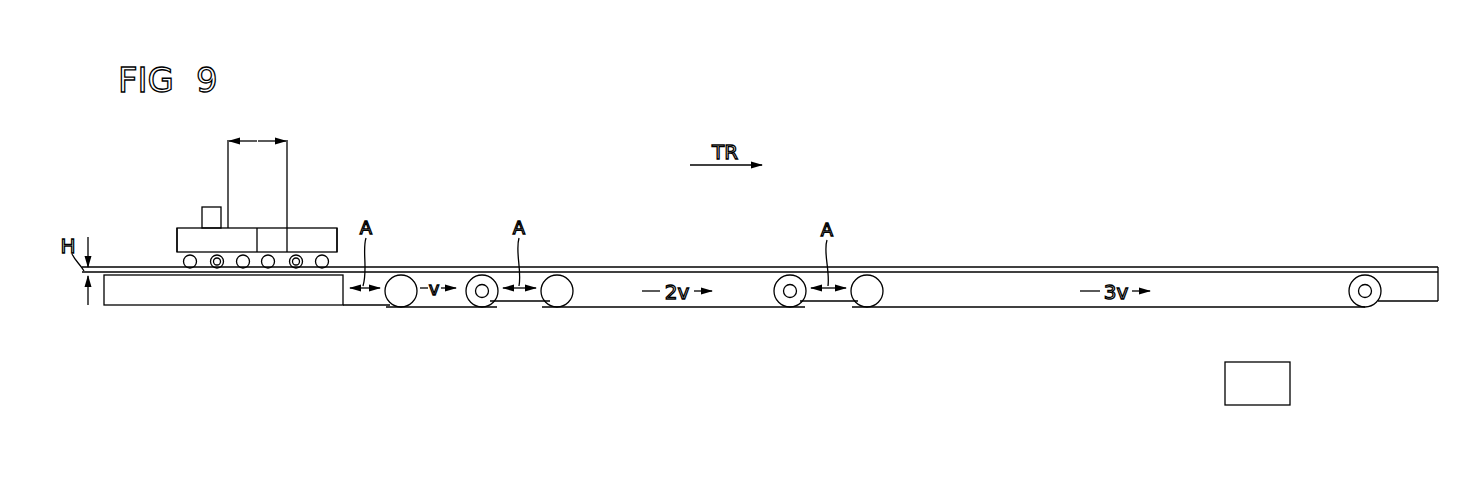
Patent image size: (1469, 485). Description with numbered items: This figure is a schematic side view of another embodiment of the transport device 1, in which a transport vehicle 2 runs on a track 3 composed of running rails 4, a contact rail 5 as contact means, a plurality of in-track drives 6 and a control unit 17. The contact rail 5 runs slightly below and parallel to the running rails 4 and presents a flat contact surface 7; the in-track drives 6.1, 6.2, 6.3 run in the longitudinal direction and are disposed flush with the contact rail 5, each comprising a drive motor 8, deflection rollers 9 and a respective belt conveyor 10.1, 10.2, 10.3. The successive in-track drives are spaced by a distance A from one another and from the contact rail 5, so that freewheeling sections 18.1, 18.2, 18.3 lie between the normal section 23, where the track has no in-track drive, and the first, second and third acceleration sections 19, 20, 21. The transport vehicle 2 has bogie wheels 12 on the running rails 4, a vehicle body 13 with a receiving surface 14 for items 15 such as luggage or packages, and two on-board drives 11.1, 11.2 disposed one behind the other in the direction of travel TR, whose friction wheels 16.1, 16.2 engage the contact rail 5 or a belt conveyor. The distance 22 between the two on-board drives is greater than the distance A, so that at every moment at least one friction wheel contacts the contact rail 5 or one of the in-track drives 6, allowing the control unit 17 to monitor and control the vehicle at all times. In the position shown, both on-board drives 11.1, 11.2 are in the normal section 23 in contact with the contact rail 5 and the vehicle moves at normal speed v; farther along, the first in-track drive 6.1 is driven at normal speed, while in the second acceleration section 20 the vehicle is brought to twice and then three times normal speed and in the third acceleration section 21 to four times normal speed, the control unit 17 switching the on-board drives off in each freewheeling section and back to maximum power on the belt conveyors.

The transport device 1 is at (1061, 193).
The transport vehicle 2 is at (272, 212).
The track 3 is at (1062, 375).
The running rails 4 is at (130, 267).
The contact rail 5 is at (123, 306).
The in-track drives 6 is at (1062, 338).
The first in-track drive 6.1 is at (418, 308).
The second in-track drive 6.2 is at (625, 308).
The third in-track drive 6.3 is at (968, 308).
The contact surface 7 is at (156, 272).
The drive motor 8 is at (474, 282).
The deflection rollers 9 is at (397, 275).
The belt conveyor of the first in-track drive 10.1 is at (420, 267).
The belt conveyor of the second in-track drive 10.2 is at (628, 267).
The belt conveyor of the third in-track drive 10.3 is at (943, 267).
The first on-board drive 11.1 is at (298, 280).
The second on-board drive 11.2 is at (220, 280).
The bogie wheels 12 is at (178, 228).
The vehicle body 13 is at (322, 228).
The receiving surface 14 is at (294, 224).
The items 15 is at (210, 207).
The friction wheel of the first on-board drive 16.1 is at (272, 280).
The friction wheel of the second on-board drive 16.2 is at (192, 280).
The control unit 17 is at (1291, 385).
The first freewheeling section 18.1 is at (372, 313).
The second freewheeling section 18.2 is at (518, 313).
The third freewheeling section 18.3 is at (830, 313).
The first acceleration section 19 is at (453, 342).
The second acceleration section 20 is at (703, 342).
The third acceleration section 21 is at (1172, 340).
The distance between the two on-board drives 22 is at (265, 140).
The normal section 23 is at (283, 365).